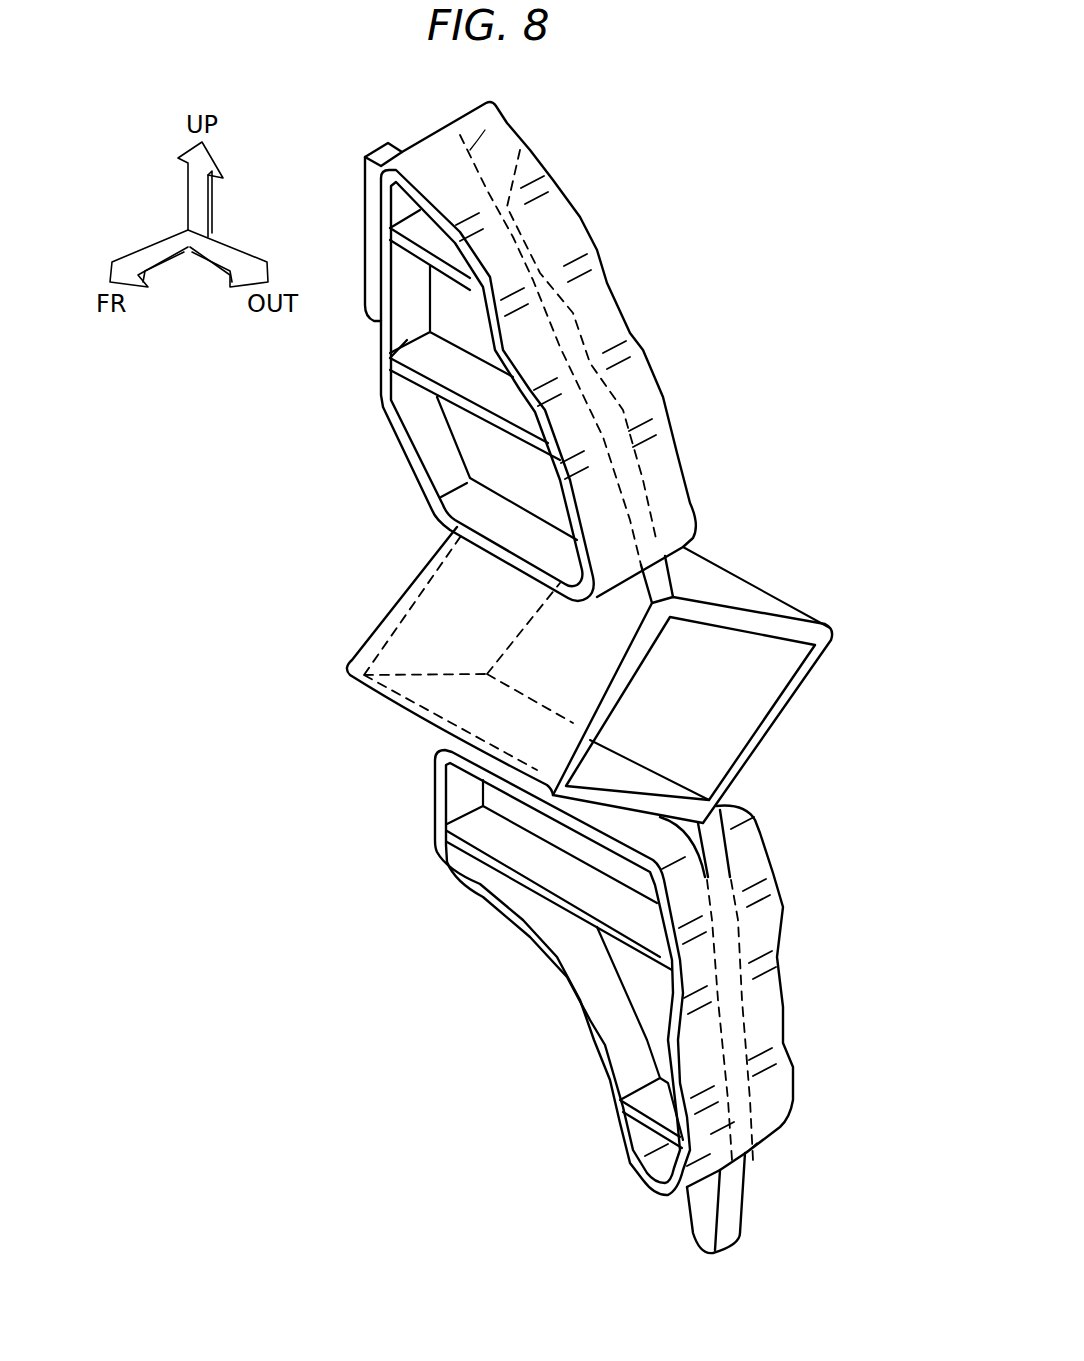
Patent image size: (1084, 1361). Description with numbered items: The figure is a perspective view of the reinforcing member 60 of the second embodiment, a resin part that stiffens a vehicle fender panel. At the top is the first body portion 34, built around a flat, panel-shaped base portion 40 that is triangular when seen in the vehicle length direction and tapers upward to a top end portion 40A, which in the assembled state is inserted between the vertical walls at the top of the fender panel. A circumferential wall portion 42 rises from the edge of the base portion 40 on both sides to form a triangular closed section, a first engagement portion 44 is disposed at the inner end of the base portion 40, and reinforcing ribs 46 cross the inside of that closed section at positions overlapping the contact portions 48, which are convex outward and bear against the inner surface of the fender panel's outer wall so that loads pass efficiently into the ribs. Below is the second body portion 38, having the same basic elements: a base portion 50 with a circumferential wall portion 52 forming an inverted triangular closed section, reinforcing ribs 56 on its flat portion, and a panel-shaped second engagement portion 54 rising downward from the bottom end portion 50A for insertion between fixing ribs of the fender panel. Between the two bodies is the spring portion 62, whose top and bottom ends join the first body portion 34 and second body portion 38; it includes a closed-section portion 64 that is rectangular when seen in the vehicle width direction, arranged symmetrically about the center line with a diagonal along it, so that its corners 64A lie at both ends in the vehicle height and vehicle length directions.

The first body portion 34 is at (700, 372).
The second body portion 38 is at (482, 985).
The base portion 40 is at (477, 437).
The top end portion 40A is at (470, 150).
The circumferential wall portion 42 is at (597, 517).
The first engagement portion 44 is at (366, 185).
The reinforcing rib 46 is at (455, 282).
The contact portions 48 is at (605, 418).
The base portion 50 is at (512, 803).
The bottom end portion 50A is at (755, 1143).
The circumferential wall portion 52 is at (710, 1133).
The second engagement portion 54 is at (727, 1227).
The reinforcing ribs 56 is at (630, 947).
The reinforcing member 60 is at (262, 940).
The spring portion 62 is at (626, 666).
The closed-section portion 64 is at (733, 610).
The corners 64A is at (832, 630).